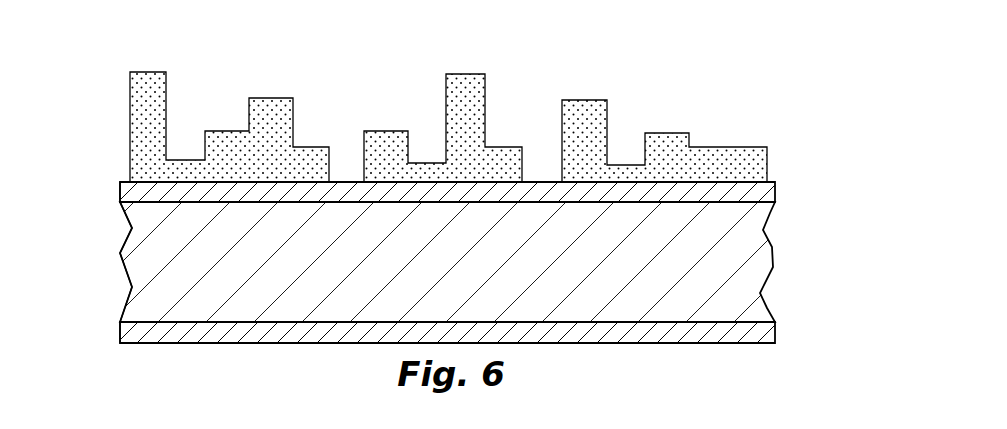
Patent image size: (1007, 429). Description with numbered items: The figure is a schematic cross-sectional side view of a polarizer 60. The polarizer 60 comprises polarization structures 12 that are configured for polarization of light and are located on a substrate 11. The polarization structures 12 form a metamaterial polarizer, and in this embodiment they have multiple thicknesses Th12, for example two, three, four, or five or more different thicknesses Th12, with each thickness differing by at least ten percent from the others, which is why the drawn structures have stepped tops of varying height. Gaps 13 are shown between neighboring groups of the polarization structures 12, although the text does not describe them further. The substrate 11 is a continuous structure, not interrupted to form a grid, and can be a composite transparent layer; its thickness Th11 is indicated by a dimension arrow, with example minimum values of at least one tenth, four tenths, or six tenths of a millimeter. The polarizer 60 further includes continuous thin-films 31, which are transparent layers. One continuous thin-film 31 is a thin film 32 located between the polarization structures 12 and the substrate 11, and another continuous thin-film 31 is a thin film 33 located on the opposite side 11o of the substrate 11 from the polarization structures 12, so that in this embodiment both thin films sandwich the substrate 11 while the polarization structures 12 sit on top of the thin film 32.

The substrate 11 is at (431, 270).
The opposite side of the substrate 11o is at (263, 320).
The polarization structures 12 is at (258, 167).
The gaps between patterned layer portions 13 is at (439, 117).
The continuous thin-film 31 is at (126, 193).
The thin film 32 is at (782, 193).
The thin film 33 is at (780, 334).
The polarizer 60 is at (822, 106).
The thickness of the polarization structures Th12 is at (128, 72).
The thickness of the substrate Th11 is at (651, 218).